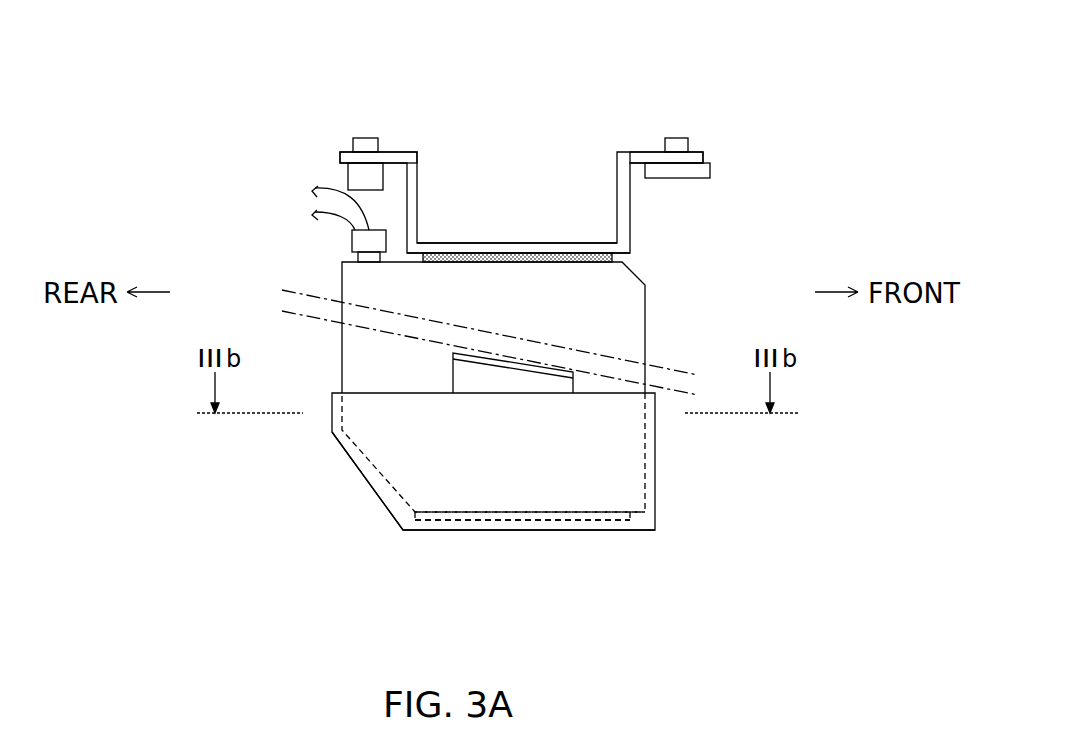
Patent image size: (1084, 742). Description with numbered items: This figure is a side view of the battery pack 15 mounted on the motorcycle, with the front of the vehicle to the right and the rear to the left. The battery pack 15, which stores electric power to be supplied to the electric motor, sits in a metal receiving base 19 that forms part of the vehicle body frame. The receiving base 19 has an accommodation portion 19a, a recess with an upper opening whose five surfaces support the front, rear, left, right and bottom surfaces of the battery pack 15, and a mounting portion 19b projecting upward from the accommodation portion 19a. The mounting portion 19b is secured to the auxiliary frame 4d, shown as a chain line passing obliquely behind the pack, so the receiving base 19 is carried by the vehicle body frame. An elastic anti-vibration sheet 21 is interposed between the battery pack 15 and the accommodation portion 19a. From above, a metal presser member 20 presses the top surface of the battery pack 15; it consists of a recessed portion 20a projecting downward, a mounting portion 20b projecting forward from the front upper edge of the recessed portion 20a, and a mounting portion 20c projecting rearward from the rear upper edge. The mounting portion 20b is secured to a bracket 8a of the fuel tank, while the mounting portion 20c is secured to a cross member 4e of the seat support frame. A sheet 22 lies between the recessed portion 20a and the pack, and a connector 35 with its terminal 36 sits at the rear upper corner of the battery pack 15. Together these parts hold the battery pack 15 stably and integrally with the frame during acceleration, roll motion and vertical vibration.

The presser member 20 is at (627, 150).
The recessed portion 20a is at (485, 242).
The mounting portion 20b is at (650, 150).
The mounting portion 20c is at (399, 150).
The cushion member 22 is at (532, 252).
The battery pack 15 is at (625, 302).
The connector 35 is at (294, 250).
The connector terminal 36 is at (353, 258).
The cross member 4e is at (346, 182).
The bracket 8a is at (693, 179).
The receiving base 19 is at (656, 517).
The accommodation portion 19a is at (420, 531).
The mounting portion 19b is at (528, 358).
The anti-vibration sheet 21 is at (513, 521).
The auxiliary frame 4d is at (680, 370).